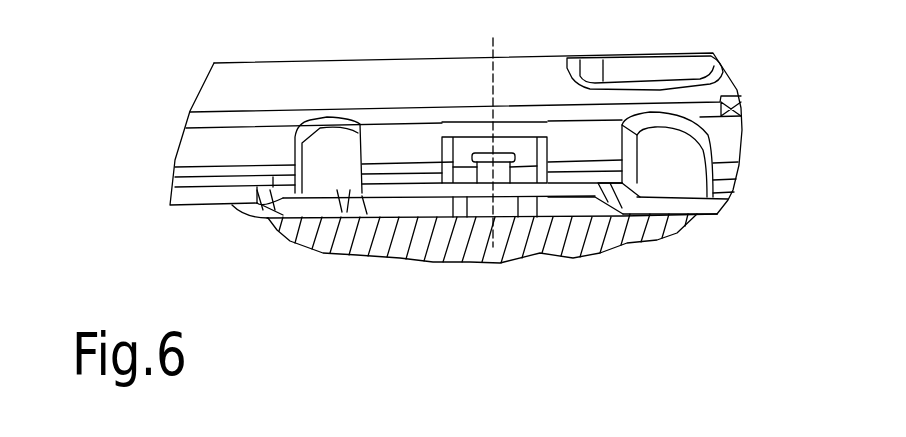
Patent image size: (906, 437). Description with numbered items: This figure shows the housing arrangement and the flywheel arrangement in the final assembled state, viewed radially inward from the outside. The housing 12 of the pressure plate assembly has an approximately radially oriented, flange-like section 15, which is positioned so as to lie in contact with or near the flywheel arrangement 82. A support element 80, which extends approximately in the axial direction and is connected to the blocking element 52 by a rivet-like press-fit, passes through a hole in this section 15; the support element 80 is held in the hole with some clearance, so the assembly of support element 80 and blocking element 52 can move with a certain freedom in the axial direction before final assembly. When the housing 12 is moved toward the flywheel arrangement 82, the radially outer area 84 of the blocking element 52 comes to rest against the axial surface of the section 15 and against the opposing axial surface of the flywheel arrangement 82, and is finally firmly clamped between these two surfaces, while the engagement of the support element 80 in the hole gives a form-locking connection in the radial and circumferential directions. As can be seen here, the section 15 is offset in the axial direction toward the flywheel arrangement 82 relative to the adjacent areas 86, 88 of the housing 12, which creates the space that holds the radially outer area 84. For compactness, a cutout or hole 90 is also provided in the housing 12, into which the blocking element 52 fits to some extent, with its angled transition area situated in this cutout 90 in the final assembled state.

The housing 12 is at (373, 60).
The section of the housing 15 is at (550, 193).
The blocking element 52 is at (482, 207).
The support element 80 is at (507, 154).
The flywheel arrangement 82 is at (627, 242).
The radially outer area of the blocking element 84 is at (540, 213).
The adjacent area of the housing 86 is at (308, 206).
The adjacent area of the housing 88 is at (713, 205).
The cutout or hole 90 is at (447, 127).